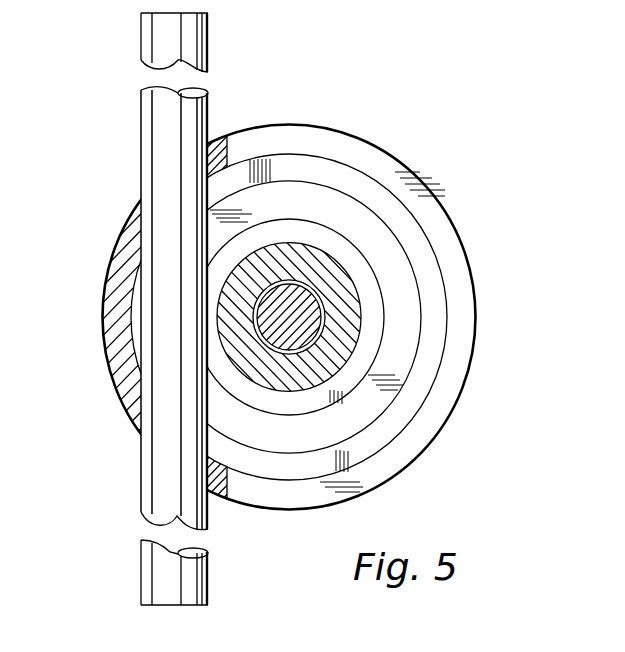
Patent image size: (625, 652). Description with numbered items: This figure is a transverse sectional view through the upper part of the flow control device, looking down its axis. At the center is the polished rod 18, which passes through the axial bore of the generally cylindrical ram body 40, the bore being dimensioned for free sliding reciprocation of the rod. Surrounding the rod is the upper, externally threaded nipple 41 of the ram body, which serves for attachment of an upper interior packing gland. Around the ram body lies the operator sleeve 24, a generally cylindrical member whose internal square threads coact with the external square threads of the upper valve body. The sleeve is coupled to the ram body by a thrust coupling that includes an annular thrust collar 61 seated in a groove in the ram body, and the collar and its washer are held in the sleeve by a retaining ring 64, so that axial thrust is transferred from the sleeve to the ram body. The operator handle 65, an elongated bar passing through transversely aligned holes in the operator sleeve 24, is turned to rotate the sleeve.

The polished rod 18 is at (303, 320).
The operator sleeve 24 is at (455, 200).
The ram body 40 is at (373, 355).
The externally threaded nipple 41 is at (345, 287).
The thrust collar 61 is at (330, 197).
The retaining ring 64 is at (370, 448).
The operator handle 65 is at (148, 118).